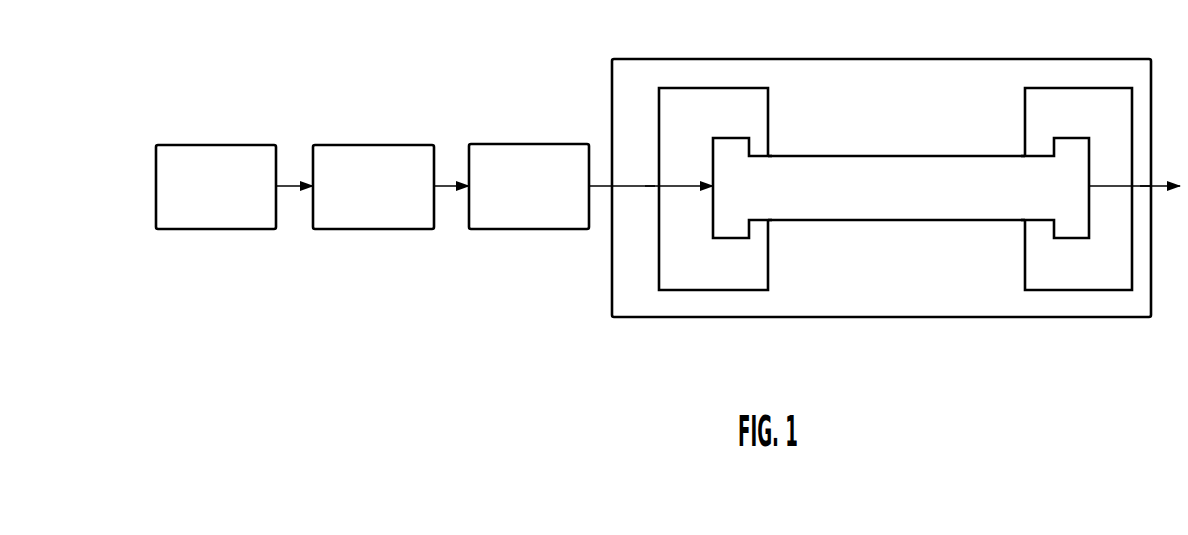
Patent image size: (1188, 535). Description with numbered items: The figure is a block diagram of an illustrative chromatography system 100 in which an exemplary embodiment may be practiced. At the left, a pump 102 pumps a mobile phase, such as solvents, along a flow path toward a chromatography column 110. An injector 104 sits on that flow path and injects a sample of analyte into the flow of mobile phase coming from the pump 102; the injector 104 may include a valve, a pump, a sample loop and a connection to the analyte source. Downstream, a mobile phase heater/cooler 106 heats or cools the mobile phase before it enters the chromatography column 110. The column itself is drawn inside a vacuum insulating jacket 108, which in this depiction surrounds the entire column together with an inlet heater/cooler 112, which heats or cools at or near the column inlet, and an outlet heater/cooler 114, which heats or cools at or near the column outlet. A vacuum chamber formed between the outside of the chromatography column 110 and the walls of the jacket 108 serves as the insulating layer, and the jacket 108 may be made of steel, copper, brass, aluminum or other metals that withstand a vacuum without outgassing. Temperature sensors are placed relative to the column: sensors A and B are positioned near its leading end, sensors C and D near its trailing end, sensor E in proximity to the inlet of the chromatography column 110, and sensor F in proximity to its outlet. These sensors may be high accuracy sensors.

The chromatography system 100 is at (218, 75).
The pump 102 is at (216, 187).
The injector 104 is at (373, 187).
The mobile phase heater/cooler 106 is at (529, 186).
The vacuum insulating jacket 108 is at (862, 318).
The chromatography column 110 is at (892, 155).
The inlet heater/cooler 112 is at (697, 87).
The outlet heater/cooler 114 is at (1087, 87).
The temperature sensor A is at (773, 155).
The temperature sensor B is at (781, 222).
The temperature sensor C is at (1003, 155).
The temperature sensor D is at (995, 221).
The temperature sensor E is at (646, 188).
The temperature sensor F is at (1142, 190).